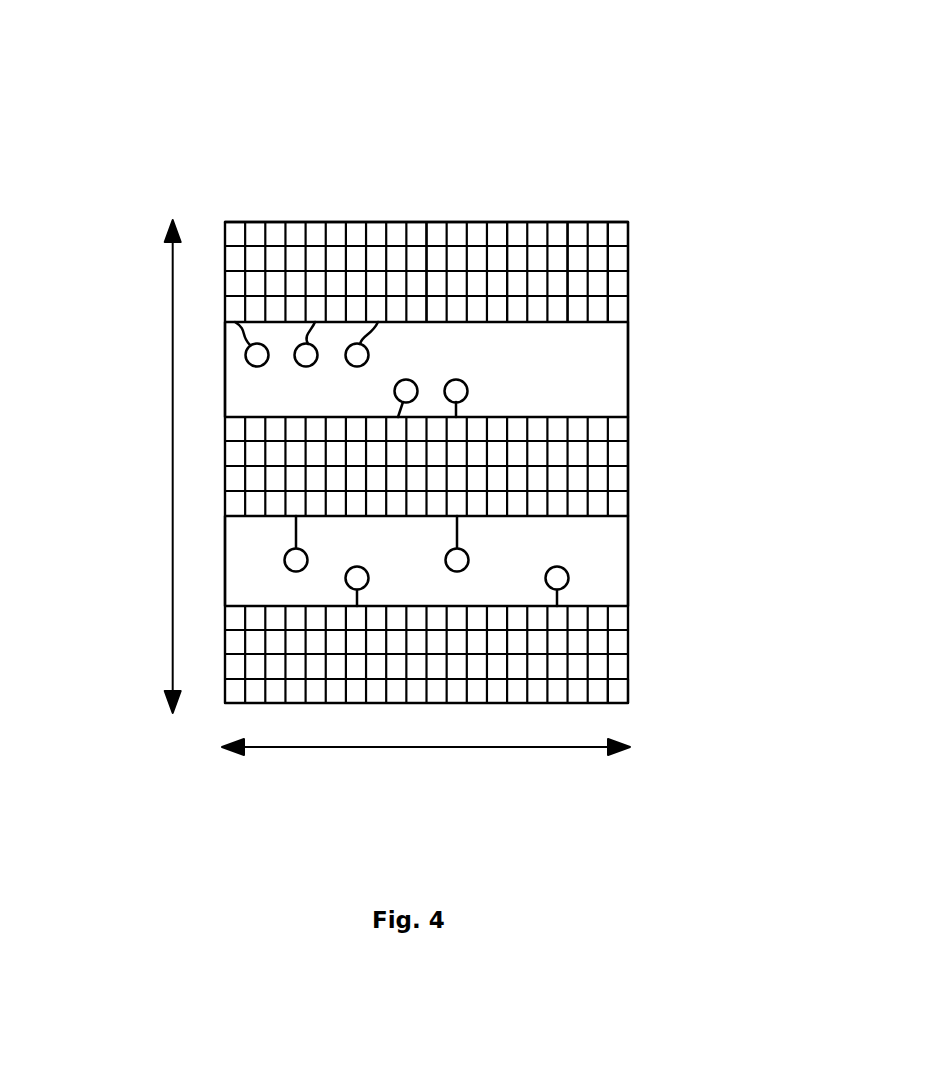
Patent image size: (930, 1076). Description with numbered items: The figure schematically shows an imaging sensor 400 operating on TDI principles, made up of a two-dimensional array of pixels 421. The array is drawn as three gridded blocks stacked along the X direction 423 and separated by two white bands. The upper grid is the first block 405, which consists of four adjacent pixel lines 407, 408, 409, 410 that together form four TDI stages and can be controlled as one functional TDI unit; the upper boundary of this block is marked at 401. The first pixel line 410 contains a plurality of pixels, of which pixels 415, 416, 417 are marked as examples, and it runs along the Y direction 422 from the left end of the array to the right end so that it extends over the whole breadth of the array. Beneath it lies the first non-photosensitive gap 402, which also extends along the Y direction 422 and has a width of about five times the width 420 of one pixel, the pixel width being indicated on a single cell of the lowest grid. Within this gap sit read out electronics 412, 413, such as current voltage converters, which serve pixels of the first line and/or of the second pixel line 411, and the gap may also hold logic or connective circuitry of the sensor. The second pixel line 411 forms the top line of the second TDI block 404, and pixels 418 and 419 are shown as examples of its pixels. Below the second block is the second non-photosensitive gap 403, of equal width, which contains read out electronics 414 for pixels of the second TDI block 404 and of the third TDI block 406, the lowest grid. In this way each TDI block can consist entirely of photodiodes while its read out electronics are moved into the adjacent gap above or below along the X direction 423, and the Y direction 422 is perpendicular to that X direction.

The imaging sensor 400 is at (677, 120).
The first scintillator layer top surface 401 is at (357, 222).
The first non-photosensitive gap 402 is at (628, 338).
The second non-photosensitive gap 403 is at (628, 562).
The second TDI block 404 is at (710, 408).
The first block 405 is at (710, 210).
The third TDI block 406 is at (710, 595).
The pixel line 407 is at (616, 230).
The pixel line 408 is at (616, 256).
The pixel line 409 is at (616, 281).
The first pixel line 410 is at (616, 308).
The second pixel line 411 is at (628, 427).
The read out electronics 412 is at (248, 360).
The read out electronics 413 is at (396, 386).
The read out electronics 414 is at (285, 562).
The pixel 415 is at (497, 307).
The pixel 416 is at (557, 307).
The pixel 417 is at (435, 305).
The pixel 418 is at (600, 417).
The pixel 419 is at (580, 417).
The width of a pixel 420 is at (633, 680).
The 2D array of pixels 421 is at (200, 118).
The Y direction 422 is at (540, 750).
The X direction 423 is at (173, 618).